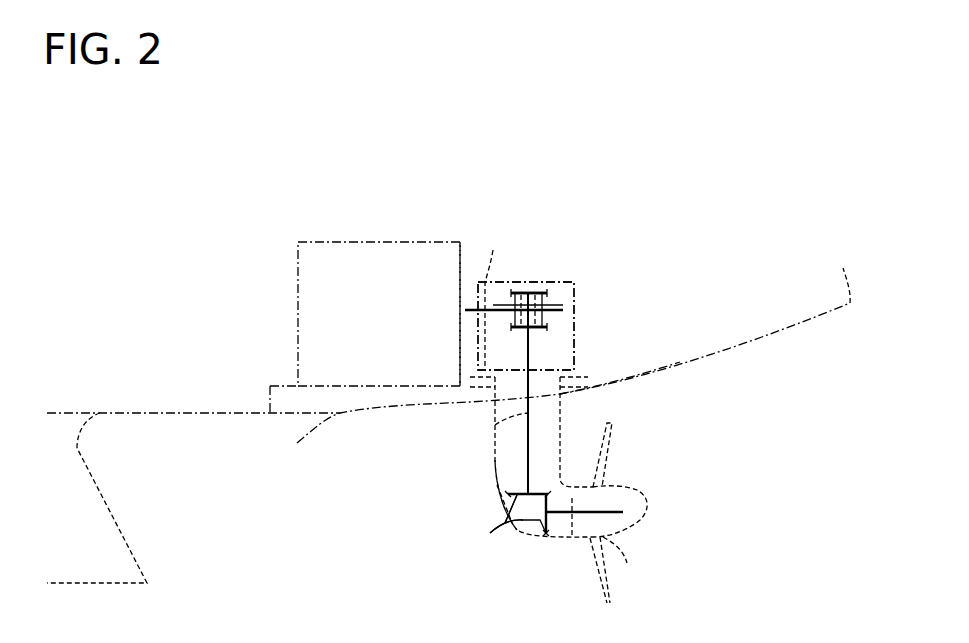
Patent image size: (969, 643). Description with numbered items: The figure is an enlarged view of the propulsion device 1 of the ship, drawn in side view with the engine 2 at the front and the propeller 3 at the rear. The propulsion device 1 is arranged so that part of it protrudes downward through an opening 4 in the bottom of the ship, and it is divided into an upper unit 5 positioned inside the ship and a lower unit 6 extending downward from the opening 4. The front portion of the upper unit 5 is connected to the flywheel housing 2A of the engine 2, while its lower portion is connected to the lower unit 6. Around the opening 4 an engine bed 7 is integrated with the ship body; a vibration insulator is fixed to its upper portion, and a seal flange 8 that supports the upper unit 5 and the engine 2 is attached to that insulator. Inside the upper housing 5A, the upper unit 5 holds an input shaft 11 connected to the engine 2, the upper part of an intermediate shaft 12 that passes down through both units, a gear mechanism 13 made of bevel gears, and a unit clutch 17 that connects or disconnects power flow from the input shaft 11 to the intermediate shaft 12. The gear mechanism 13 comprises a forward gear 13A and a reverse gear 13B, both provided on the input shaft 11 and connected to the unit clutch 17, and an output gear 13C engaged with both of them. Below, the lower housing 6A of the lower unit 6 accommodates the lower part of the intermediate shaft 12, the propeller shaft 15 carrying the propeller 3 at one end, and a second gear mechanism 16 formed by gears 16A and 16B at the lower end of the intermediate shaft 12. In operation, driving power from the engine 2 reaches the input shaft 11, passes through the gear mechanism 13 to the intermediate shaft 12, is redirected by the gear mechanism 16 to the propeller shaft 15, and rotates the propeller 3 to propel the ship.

The propulsion device 1 is at (672, 220).
The engine 2 is at (408, 241).
The flywheel housing 2A is at (465, 271).
The propeller 3 is at (627, 563).
The opening 4 is at (515, 402).
The upper unit 5 is at (603, 267).
The upper housing 5A is at (578, 297).
The lower unit 6 is at (450, 494).
The lower housing 6A is at (493, 463).
The engine bed 7 is at (567, 370).
The seal flange 8 is at (610, 390).
The input shaft 11 is at (487, 299).
The intermediate shaft 12 is at (495, 423).
The gear mechanism 13 is at (556, 294).
The forward gear 13A is at (511, 293).
The reverse gear 13B is at (550, 327).
The output gear 13C is at (533, 330).
The propeller shaft 15 is at (617, 492).
The gear mechanism 16 is at (490, 580).
The gear 16A is at (512, 520).
The gear 16B is at (520, 527).
The unit clutch 17 is at (532, 290).